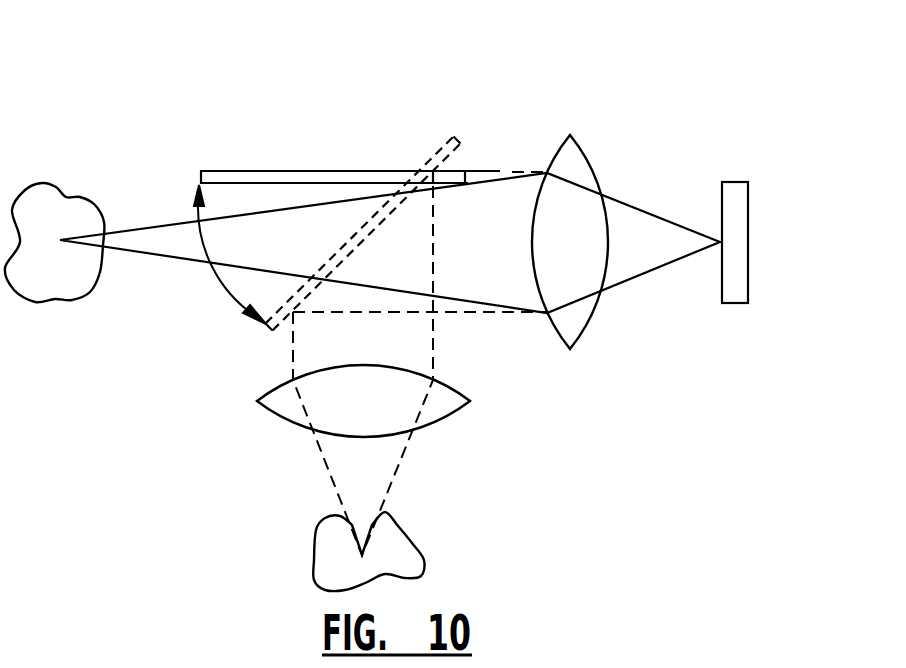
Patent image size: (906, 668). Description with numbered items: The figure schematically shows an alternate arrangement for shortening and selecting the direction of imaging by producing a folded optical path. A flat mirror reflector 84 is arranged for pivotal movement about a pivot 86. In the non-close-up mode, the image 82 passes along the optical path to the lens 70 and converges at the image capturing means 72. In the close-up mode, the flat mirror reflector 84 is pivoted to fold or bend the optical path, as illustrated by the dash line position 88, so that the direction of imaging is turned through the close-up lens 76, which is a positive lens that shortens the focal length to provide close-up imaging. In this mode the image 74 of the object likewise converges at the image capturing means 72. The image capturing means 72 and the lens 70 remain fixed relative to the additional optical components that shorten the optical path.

The lens 70 is at (580, 333).
The image capturing means 72 is at (735, 182).
The object 74 is at (312, 568).
The close-up lens 76 is at (453, 415).
The image 82 is at (58, 300).
The flat mirror reflector 84 is at (273, 170).
The pivot 86 is at (417, 170).
The dash line position 88 is at (300, 286).